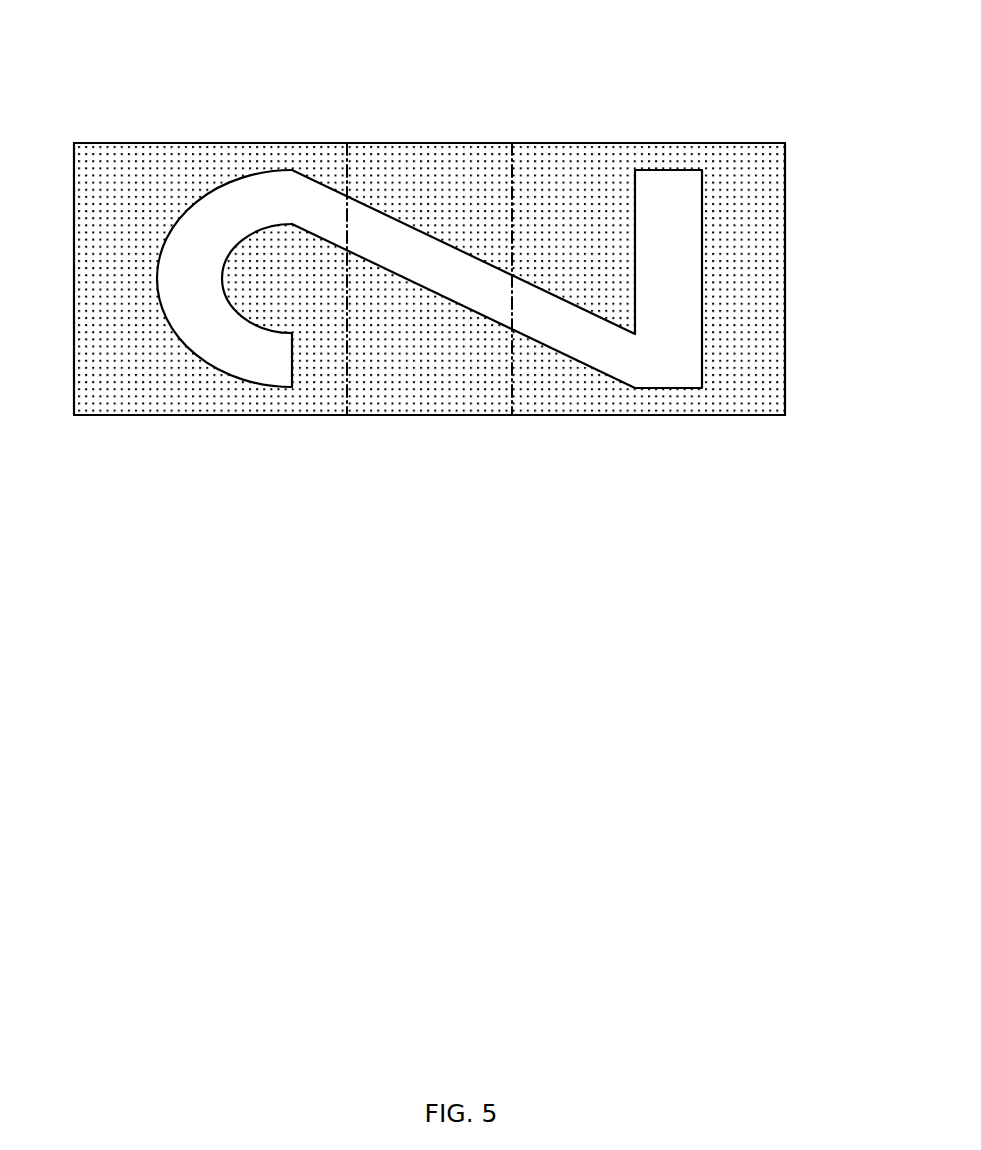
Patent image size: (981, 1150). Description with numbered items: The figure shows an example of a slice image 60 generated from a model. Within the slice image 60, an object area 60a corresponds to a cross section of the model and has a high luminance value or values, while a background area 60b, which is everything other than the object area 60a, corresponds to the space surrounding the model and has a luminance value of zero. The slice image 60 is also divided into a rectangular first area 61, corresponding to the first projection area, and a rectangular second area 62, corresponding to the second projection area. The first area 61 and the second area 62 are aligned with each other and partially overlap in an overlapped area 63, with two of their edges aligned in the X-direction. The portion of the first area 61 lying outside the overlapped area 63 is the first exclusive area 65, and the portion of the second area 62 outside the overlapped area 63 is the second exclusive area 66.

The slice image 60 is at (757, 84).
The object area 60a is at (170, 285).
The background area 60b is at (765, 282).
The first area 61 is at (512, 425).
The second area 62 is at (346, 447).
The overlapped area 63 is at (512, 133).
The first exclusive area 65 is at (73, 133).
The second exclusive area 66 is at (785, 133).